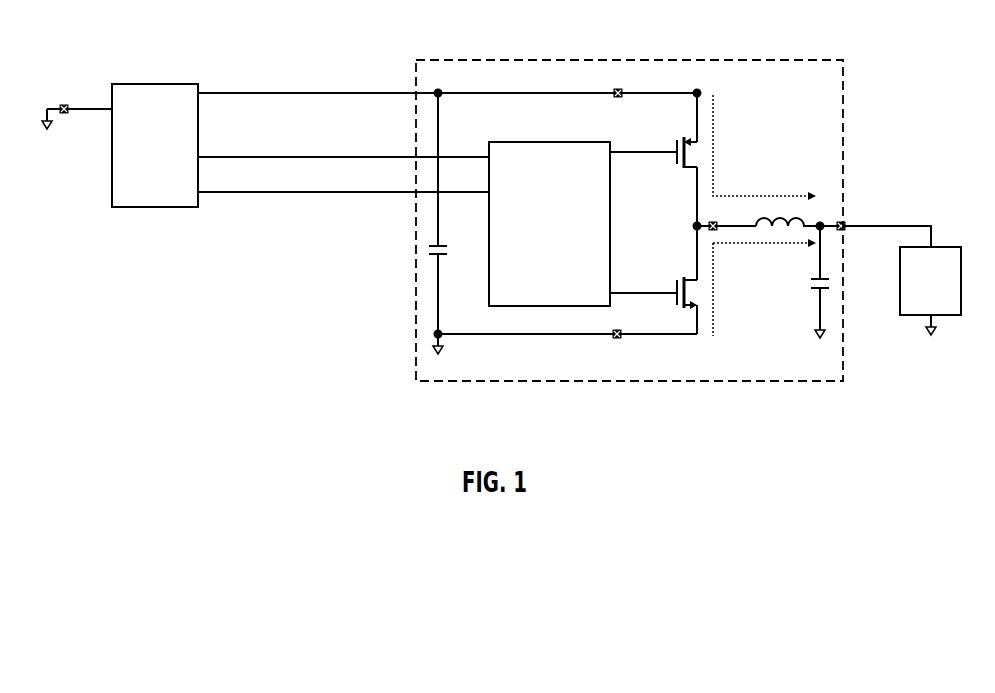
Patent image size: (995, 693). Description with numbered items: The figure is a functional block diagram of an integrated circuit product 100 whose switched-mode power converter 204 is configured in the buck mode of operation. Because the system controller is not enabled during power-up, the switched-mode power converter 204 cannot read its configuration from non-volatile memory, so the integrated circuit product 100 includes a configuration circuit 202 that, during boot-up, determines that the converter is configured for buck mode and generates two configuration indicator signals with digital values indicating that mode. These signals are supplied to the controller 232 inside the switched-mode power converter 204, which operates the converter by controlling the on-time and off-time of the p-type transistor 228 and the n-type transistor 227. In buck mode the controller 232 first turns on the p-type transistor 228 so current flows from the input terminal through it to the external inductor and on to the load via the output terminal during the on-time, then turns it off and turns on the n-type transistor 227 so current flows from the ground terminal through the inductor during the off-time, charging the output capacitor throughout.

The integrated circuit product 100 is at (118, 69).
The configuration circuit 202 is at (170, 176).
The switched-mode power converter 204 is at (414, 81).
The controller 232 is at (565, 268).
The p-type transistor 228 is at (683, 166).
The n-type transistor 227 is at (683, 284).